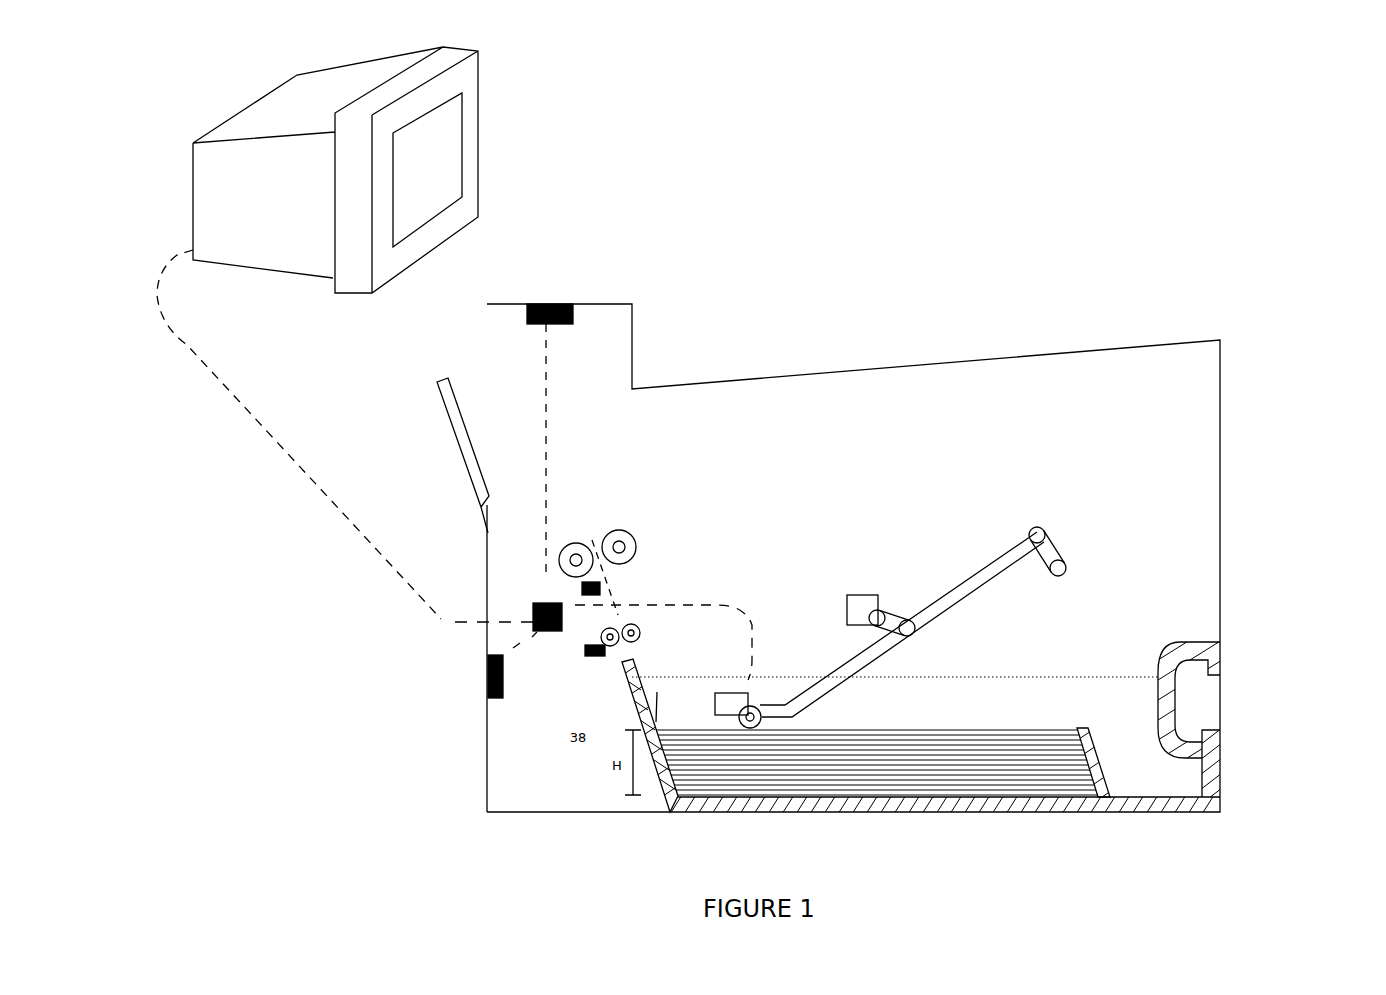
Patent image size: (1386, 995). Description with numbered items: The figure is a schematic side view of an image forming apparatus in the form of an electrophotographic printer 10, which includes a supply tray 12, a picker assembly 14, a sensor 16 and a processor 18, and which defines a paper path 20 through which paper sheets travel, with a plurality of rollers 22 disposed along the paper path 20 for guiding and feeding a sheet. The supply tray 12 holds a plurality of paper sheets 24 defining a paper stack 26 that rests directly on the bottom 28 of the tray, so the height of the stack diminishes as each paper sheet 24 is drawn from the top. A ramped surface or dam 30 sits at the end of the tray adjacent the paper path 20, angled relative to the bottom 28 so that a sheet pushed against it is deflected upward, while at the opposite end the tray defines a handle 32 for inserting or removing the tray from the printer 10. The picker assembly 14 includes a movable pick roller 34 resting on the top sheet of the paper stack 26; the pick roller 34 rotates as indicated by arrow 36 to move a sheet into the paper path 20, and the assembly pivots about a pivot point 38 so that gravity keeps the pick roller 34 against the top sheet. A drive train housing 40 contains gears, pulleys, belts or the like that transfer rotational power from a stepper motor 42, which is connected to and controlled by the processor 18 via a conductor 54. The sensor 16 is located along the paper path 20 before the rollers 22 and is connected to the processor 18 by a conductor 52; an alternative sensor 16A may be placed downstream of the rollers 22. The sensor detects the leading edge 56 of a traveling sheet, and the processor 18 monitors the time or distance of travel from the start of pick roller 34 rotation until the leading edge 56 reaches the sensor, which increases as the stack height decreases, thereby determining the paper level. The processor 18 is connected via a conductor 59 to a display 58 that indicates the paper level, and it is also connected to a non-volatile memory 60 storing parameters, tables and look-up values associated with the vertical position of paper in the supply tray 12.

The electrophotographic printer 10 is at (1276, 471).
The supply tray 12 is at (1248, 746).
The picker assembly 14 is at (955, 559).
The sensor 16 is at (498, 537).
The sensor 16A is at (568, 588).
The processor 18 is at (524, 608).
The paper path 20 is at (588, 527).
The rollers 22 is at (653, 622).
The paper sheets 24 is at (1010, 727).
The paper stack 26 is at (780, 771).
The bottom 28 is at (1131, 791).
The dam 30 is at (626, 706).
The handle 32 is at (1183, 695).
The pick roller 34 is at (738, 703).
The arrow 36 is at (754, 706).
The pivot point 38 is at (1050, 530).
The drive train housing 40 is at (845, 594).
The stepper motor 42 is at (714, 707).
The conductor 52 is at (568, 643).
The conductor 54 is at (728, 605).
The leading edge 56 is at (657, 698).
The display 58 is at (513, 153).
The conductor 59 is at (367, 436).
The non-volatile memory 60 is at (505, 701).